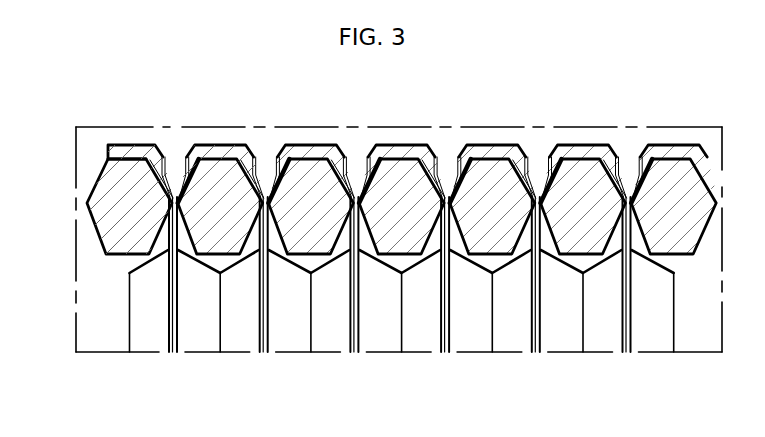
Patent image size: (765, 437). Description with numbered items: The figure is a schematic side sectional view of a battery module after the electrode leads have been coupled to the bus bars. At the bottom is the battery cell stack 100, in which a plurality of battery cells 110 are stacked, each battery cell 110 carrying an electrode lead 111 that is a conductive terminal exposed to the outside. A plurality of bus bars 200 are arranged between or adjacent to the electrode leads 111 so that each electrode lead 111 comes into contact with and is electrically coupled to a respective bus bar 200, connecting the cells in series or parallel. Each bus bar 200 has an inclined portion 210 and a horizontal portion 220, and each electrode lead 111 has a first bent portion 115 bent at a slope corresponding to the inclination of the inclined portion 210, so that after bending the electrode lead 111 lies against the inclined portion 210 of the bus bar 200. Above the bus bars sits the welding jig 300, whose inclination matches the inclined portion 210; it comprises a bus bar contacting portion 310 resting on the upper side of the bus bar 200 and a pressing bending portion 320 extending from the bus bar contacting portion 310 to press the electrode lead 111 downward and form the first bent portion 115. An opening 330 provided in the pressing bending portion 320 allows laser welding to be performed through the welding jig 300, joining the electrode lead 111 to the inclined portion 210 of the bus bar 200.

The battery cell stack 100 is at (130, 372).
The battery cell 110 is at (192, 340).
The electrode lead 111 is at (200, 178).
The first bent portion 115 is at (170, 198).
The bus bar 200 is at (90, 231).
The inclined portion 210 is at (100, 172).
The horizontal portion 220 is at (110, 158).
The welding jig 300 is at (224, 143).
The bus bar contacting portion 310 is at (124, 148).
The pressing bending portion 320 is at (171, 199).
The opening 330 is at (174, 199).